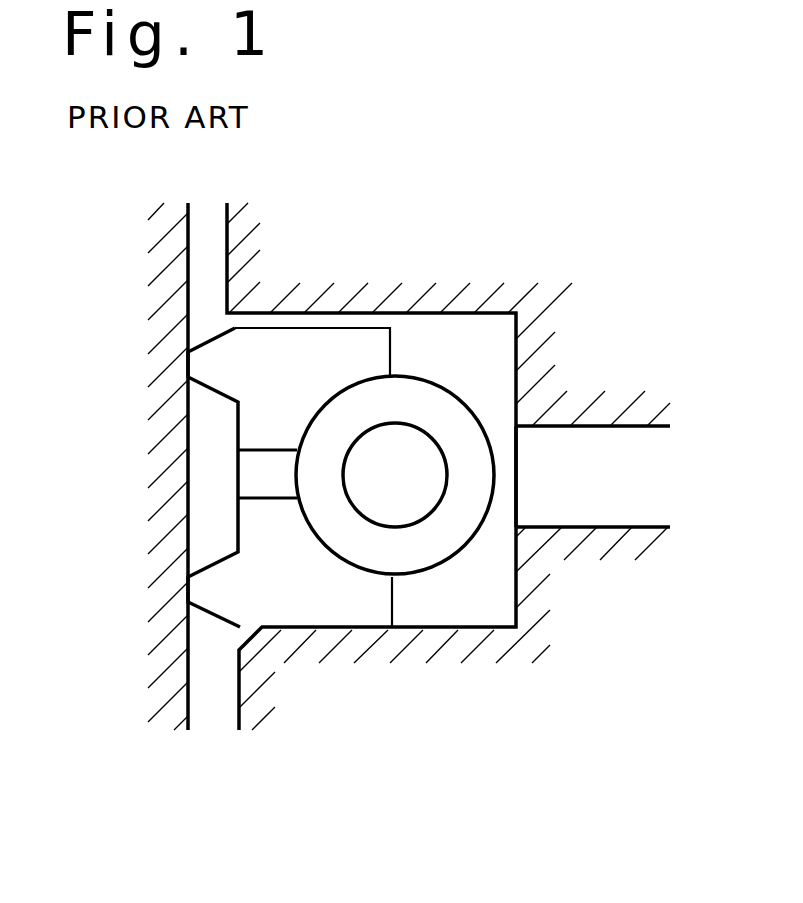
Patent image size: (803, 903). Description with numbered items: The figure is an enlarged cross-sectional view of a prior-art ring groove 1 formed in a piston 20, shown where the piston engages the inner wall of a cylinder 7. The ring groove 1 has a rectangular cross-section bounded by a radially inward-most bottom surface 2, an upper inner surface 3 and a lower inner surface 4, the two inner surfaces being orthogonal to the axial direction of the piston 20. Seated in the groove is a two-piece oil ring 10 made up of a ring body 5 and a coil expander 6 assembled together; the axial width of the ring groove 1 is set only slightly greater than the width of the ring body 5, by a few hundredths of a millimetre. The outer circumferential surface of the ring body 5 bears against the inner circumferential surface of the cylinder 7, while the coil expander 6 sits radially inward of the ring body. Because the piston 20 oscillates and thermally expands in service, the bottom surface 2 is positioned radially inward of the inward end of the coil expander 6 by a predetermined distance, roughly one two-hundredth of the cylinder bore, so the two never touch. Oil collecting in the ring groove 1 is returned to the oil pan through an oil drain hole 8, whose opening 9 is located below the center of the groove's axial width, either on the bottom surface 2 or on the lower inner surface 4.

The ring groove 1 is at (205, 319).
The bottom surface 2 is at (516, 612).
The upper inner surface 3 is at (430, 318).
The lower inner surface 4 is at (420, 627).
The ring body 5 is at (355, 350).
The coil expander 6 is at (437, 405).
The cylinder 7 is at (86, 477).
The oil drain hole 8 is at (617, 427).
The opening 9 is at (517, 487).
The oil ring 10 is at (207, 531).
The piston 20 is at (588, 643).